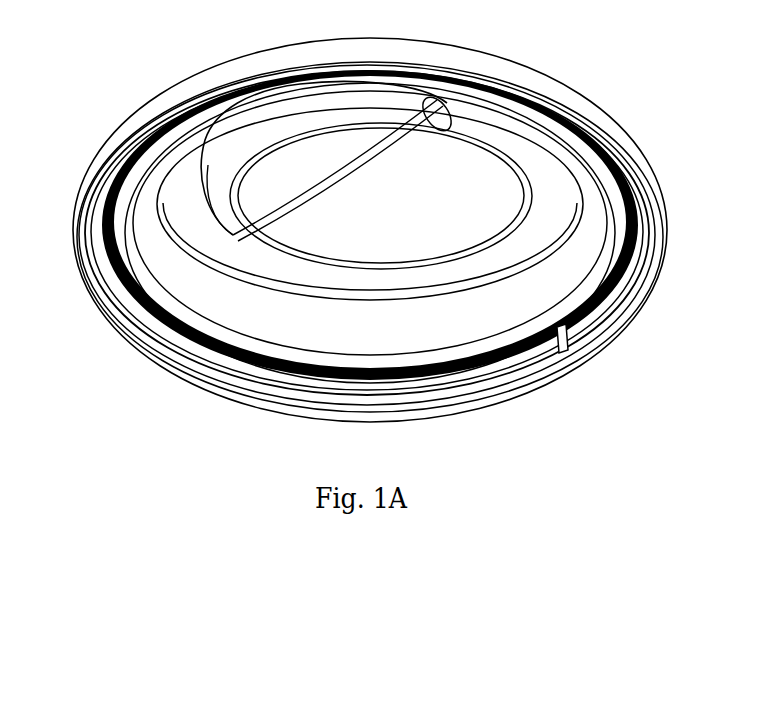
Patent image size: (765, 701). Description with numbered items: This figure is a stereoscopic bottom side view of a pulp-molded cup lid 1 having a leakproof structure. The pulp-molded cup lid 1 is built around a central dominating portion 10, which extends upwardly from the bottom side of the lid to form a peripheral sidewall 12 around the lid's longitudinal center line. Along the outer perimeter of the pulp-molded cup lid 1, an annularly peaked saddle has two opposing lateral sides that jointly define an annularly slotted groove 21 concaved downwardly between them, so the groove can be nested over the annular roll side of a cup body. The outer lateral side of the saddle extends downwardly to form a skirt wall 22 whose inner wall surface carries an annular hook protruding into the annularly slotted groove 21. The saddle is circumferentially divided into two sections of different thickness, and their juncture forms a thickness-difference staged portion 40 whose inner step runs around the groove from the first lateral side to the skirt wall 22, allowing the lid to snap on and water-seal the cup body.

The pulp-molded cup lid 1 is at (56, 48).
The central dominating portion 10 is at (192, 72).
The peripheral sidewall 12 is at (534, 91).
The annularly slotted groove 21 is at (497, 358).
The skirt wall 22 is at (627, 318).
The thickness-difference staged portion 40 is at (563, 352).